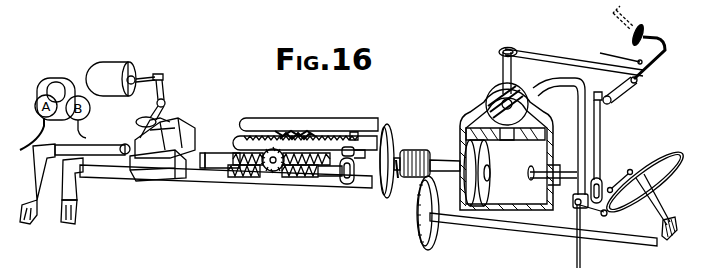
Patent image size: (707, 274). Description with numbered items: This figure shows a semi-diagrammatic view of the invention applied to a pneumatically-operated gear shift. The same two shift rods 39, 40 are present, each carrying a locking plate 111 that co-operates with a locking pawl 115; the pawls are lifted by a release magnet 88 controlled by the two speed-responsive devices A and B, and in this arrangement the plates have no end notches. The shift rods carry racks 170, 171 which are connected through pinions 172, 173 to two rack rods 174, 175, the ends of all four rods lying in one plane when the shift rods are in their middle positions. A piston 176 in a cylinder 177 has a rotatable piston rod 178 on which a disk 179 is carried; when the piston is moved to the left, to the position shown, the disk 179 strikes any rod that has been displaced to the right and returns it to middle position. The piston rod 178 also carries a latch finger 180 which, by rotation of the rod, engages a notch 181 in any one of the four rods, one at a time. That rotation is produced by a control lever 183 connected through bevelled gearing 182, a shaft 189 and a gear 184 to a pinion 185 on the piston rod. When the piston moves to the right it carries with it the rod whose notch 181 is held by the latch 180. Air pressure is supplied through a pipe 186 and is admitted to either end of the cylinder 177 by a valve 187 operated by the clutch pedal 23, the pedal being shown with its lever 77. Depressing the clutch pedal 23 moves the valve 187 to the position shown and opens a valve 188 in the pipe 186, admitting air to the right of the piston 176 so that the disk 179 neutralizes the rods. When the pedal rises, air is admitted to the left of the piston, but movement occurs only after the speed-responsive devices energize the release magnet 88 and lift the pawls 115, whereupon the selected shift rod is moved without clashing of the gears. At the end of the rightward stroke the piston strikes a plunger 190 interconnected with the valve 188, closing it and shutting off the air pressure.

The clutch pedal 23 is at (646, 38).
The hand lever 77 is at (648, 63).
The release magnet 88 is at (125, 91).
The locking pawl 115 is at (175, 139).
The rack 171 is at (232, 153).
The shift rod 40 is at (206, 159).
The shift rod 39 is at (207, 173).
The locking plate 111 is at (160, 172).
The rack rod 174 is at (250, 136).
The pinion 173 is at (291, 132).
The rack rod 175 is at (330, 126).
The notch 181 is at (357, 133).
The pinion 172 is at (273, 172).
The rack 170 is at (310, 177).
The latch finger 180 is at (347, 184).
The disk 179 is at (386, 198).
The piston rod 178 is at (398, 180).
The pinion 185 is at (418, 158).
The valve 187 is at (529, 104).
The piston 176 is at (484, 192).
The cylinder 177 is at (508, 215).
The gear 184 is at (420, 237).
The pipe 186 is at (575, 240).
The plunger 190 is at (574, 203).
The valve 188 is at (593, 215).
The control lever 183 is at (629, 169).
The shaft 189 is at (617, 237).
The bevelled gearing 182 is at (670, 241).